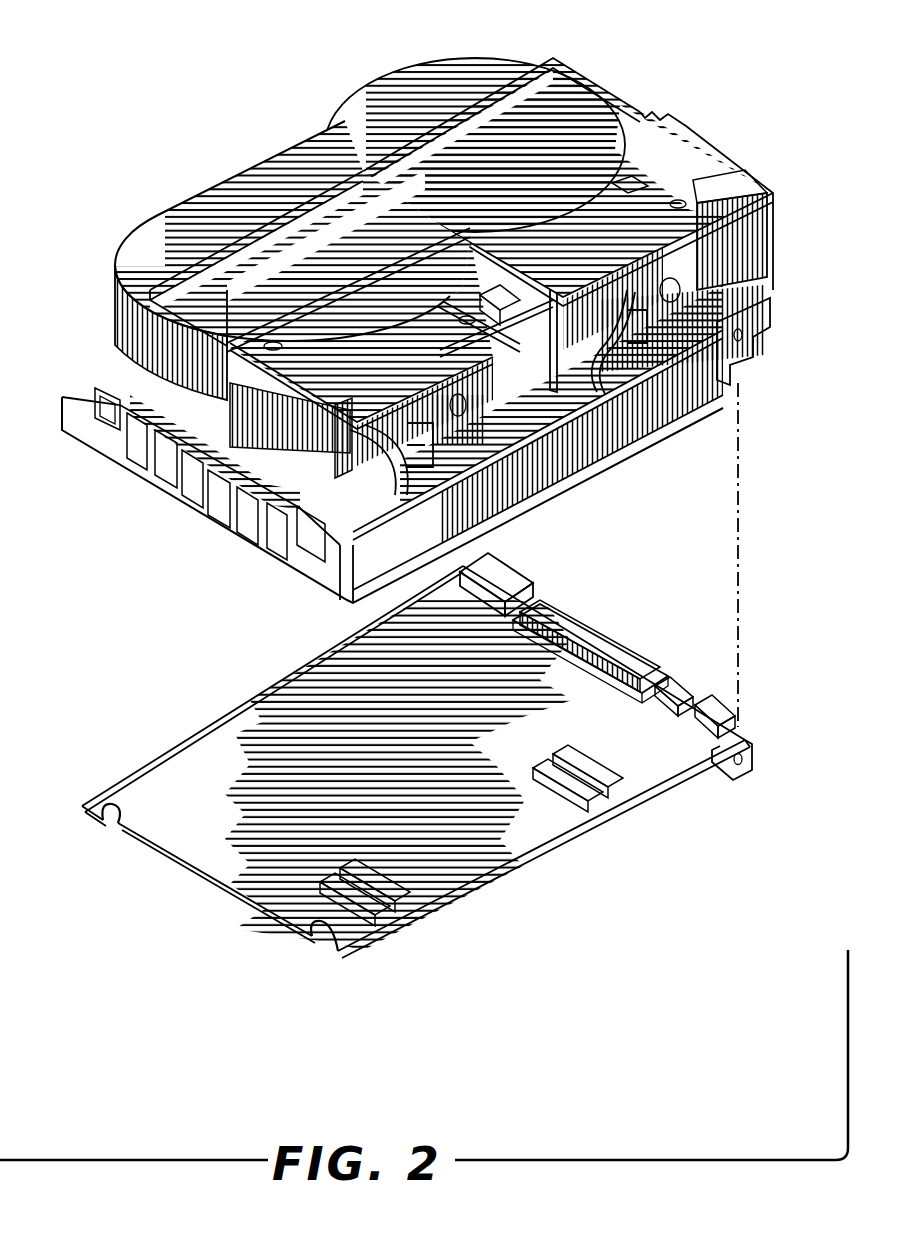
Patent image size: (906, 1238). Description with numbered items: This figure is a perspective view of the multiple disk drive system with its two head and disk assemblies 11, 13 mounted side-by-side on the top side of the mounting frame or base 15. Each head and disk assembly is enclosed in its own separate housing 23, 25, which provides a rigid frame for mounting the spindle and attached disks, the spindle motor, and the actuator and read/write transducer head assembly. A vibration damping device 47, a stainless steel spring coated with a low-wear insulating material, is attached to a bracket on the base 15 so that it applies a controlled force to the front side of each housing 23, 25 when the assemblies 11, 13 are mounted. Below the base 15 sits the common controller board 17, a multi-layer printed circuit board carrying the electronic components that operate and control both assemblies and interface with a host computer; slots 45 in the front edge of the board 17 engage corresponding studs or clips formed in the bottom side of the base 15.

The head and disk assembly 11 is at (532, 175).
The head and disk assembly 13 is at (264, 260).
The mounting frame or base 15 is at (96, 468).
The common controller board 17 is at (520, 882).
The housing 23 is at (490, 100).
The housing 25 is at (250, 237).
The slots 45 is at (104, 836).
The vibration damping device 47 is at (290, 140).